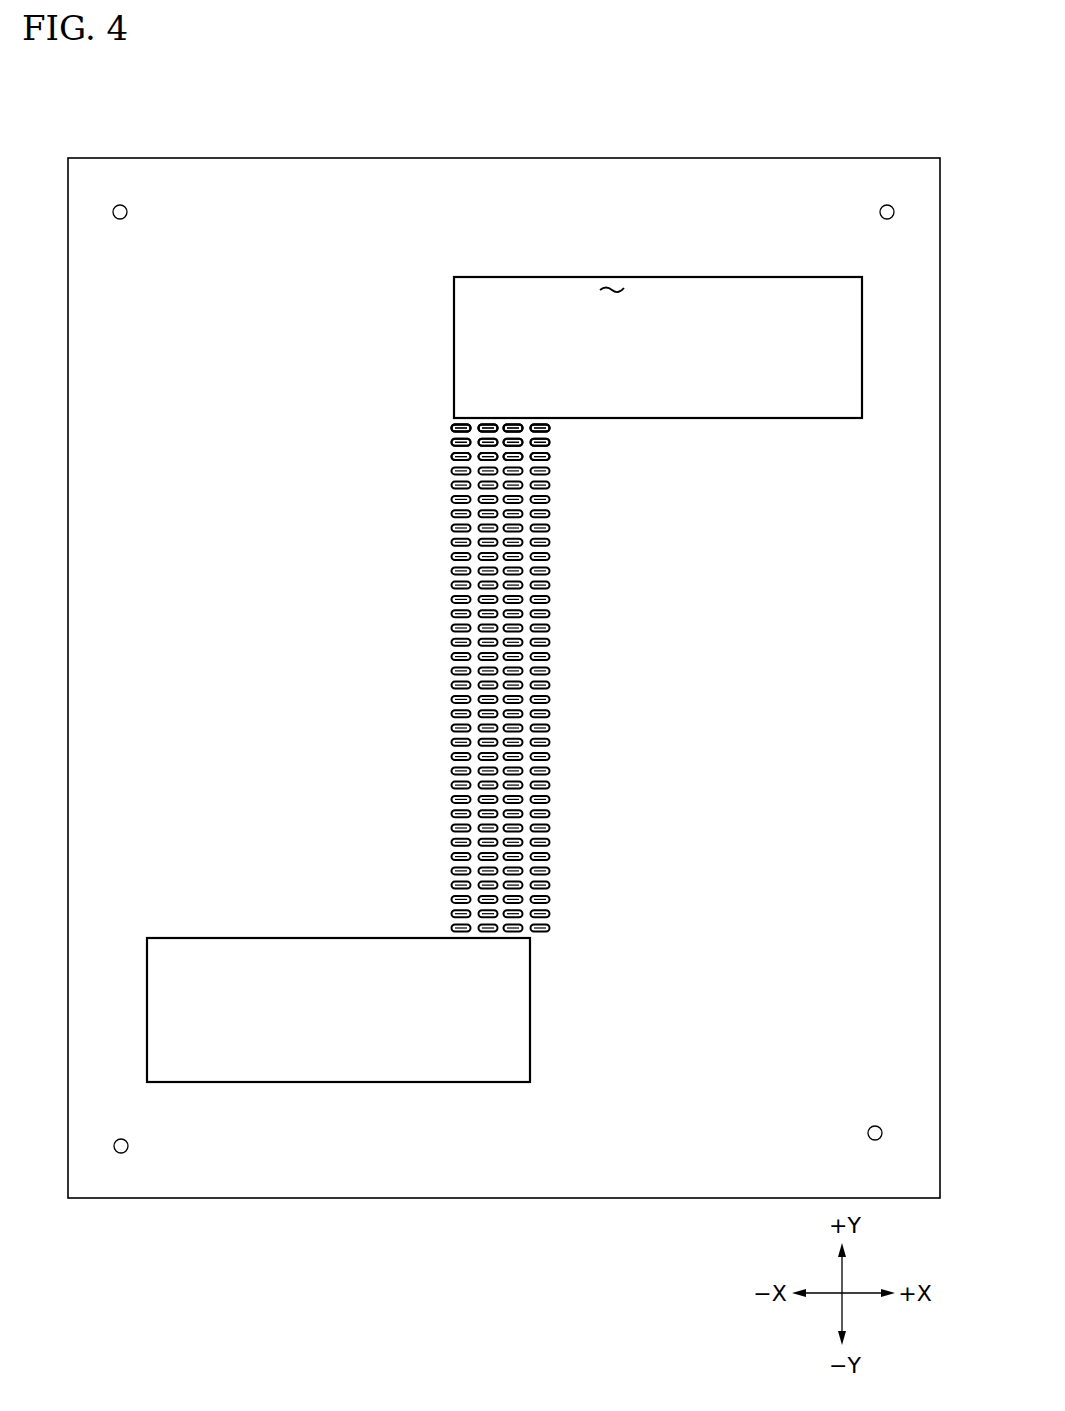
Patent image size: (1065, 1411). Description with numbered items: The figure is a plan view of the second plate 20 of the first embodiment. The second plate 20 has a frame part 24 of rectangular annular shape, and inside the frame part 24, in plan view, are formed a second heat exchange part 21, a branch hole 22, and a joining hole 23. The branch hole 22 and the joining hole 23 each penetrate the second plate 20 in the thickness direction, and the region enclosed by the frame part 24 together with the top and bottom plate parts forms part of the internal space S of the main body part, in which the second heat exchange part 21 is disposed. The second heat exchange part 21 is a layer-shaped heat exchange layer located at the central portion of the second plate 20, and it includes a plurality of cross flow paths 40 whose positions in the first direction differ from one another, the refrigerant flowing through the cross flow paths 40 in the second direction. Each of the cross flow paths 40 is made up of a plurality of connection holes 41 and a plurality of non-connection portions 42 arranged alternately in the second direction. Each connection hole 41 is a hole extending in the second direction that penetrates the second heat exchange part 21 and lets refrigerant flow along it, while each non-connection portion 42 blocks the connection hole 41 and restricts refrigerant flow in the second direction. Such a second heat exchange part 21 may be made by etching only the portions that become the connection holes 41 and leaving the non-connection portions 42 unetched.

The second plate 20 is at (56, 146).
The second heat exchange part 21 is at (430, 670).
The branch hole 22 is at (529, 1012).
The joining hole 23 is at (455, 333).
The frame part 24 is at (817, 198).
The cross flow paths 40 is at (574, 428).
The connection holes 41 is at (513, 428).
The non-connection portions 42 is at (497, 413).
The internal space S is at (609, 288).